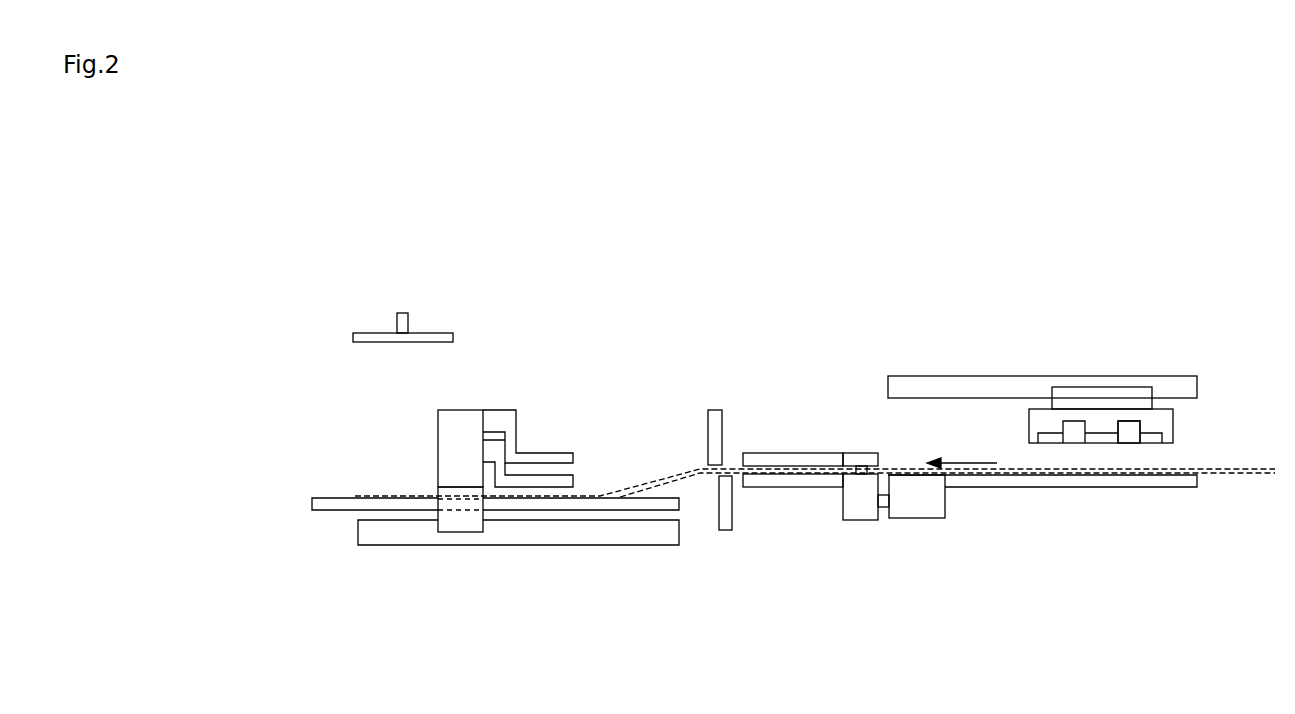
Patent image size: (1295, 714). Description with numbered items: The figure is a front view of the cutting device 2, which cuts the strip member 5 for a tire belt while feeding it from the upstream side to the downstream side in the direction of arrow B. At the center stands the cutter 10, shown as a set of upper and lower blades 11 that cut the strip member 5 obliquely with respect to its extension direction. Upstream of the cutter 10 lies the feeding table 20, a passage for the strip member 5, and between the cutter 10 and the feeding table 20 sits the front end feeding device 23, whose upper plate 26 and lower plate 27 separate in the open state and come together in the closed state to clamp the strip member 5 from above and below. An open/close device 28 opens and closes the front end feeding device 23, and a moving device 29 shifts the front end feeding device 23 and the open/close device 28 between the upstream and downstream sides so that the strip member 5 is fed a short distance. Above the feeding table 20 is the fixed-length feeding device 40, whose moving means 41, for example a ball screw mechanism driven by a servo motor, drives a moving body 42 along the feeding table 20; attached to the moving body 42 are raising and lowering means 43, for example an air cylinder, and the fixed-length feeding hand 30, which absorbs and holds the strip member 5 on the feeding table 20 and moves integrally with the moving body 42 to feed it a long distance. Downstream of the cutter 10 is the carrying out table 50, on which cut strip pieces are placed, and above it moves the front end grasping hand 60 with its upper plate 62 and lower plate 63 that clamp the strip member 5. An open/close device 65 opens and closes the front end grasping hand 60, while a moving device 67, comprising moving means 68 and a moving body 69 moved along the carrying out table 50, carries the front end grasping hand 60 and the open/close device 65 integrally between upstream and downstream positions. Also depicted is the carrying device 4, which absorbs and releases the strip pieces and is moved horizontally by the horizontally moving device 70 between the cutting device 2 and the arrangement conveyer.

The cutting device 2 is at (803, 277).
The carrying device 4 is at (431, 333).
The horizontally moving device 70 is at (396, 325).
The strip member 5 is at (389, 494).
The cutter 10 is at (687, 577).
The upper and lower blades 11 is at (716, 463).
The feeding table 20 is at (1157, 481).
The front end feeding device 23 is at (742, 401).
The upper plate 26 is at (763, 458).
The lower plate 27 is at (815, 481).
The open/close device 28 is at (863, 512).
The moving device 29 is at (920, 512).
The fixed-length feeding hand 30 is at (1130, 438).
The fixed-length feeding device 40 is at (990, 320).
The moving means 41 is at (1005, 385).
The moving body 42 is at (1095, 395).
The raising and lowering means 43 is at (1165, 420).
The carrying out table 50 is at (318, 509).
The front end grasping hand 60 is at (544, 388).
The upper plate 62 is at (554, 452).
The lower plate 63 is at (572, 481).
The open/close device 65 is at (460, 430).
The moving device 67 is at (445, 600).
The moving means 68 is at (522, 540).
The moving body 69 is at (462, 520).